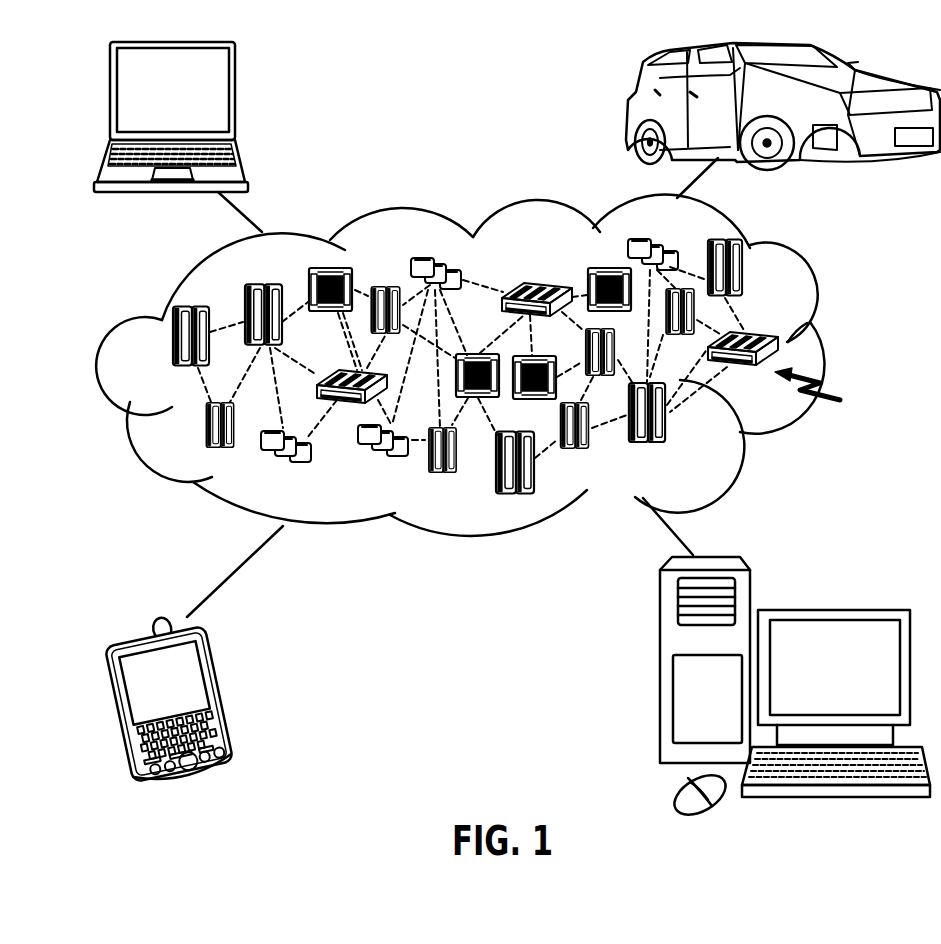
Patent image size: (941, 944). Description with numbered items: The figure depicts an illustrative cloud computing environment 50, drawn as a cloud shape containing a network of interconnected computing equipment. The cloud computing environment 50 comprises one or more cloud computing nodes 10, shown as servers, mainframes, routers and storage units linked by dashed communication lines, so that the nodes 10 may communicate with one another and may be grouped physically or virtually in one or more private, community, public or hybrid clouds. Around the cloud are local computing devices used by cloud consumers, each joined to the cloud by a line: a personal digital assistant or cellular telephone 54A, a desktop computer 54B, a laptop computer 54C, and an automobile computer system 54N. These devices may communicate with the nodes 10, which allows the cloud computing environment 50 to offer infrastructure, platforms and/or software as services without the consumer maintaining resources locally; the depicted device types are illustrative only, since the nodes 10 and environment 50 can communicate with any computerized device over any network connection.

The cloud computing node 10 is at (821, 392).
The cloud computing environment 50 is at (835, 347).
The personal digital assistant (PDA) or cellular telephone 54A is at (224, 696).
The desktop computer 54B is at (830, 610).
The laptop computer 54C is at (236, 99).
The automobile computer system 54N is at (632, 108).